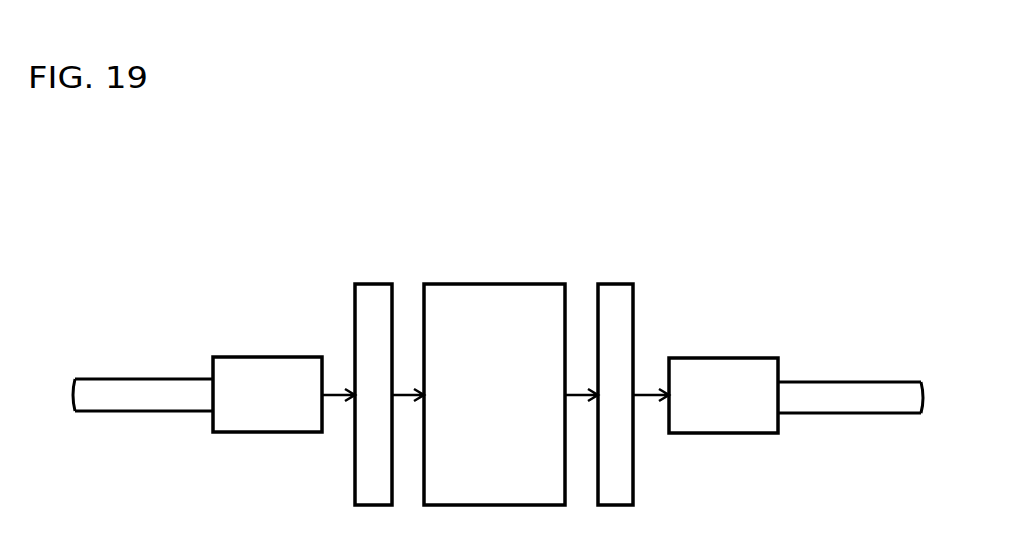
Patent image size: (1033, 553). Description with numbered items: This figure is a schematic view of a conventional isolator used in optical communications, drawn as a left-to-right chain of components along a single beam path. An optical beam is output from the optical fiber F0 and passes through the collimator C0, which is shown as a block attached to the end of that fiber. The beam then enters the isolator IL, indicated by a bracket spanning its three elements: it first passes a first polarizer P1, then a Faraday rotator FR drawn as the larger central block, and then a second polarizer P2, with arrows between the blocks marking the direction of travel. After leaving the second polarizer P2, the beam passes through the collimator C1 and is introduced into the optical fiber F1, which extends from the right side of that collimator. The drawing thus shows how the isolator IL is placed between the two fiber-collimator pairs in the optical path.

The optical fiber F0 is at (120, 376).
The collimator C0 is at (259, 350).
The isolator IL is at (658, 203).
The first polarizer P1 is at (370, 276).
The Faraday rotator FR is at (496, 278).
The second polarizer P2 is at (620, 278).
The collimator C1 is at (722, 355).
The optical fiber F1 is at (850, 373).